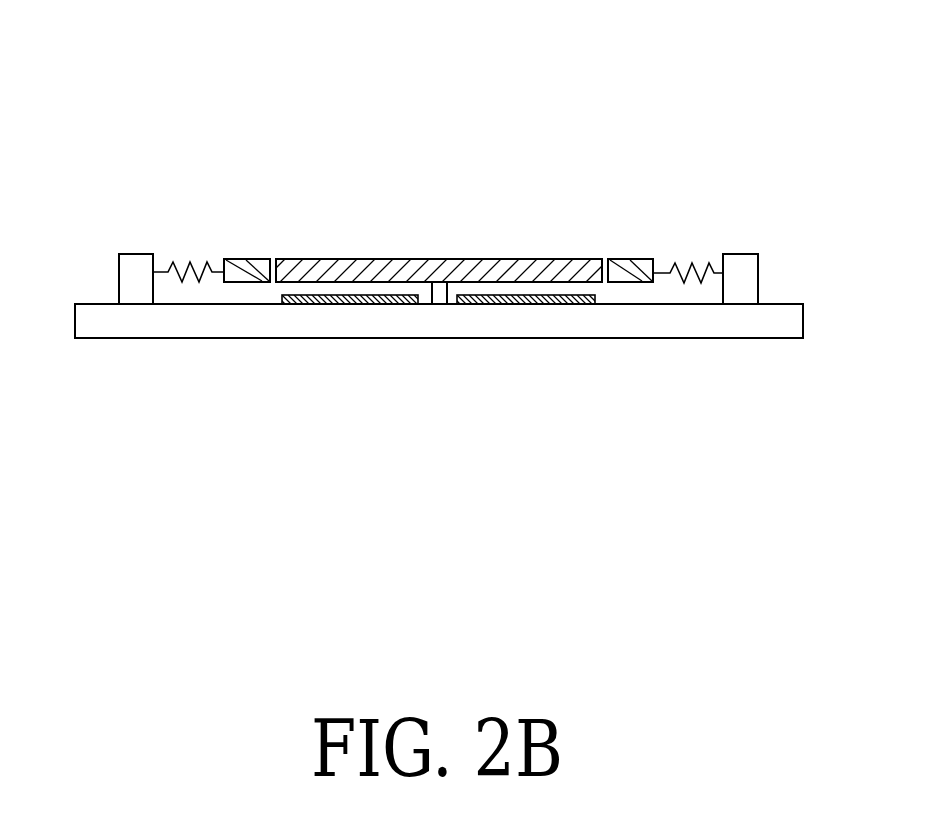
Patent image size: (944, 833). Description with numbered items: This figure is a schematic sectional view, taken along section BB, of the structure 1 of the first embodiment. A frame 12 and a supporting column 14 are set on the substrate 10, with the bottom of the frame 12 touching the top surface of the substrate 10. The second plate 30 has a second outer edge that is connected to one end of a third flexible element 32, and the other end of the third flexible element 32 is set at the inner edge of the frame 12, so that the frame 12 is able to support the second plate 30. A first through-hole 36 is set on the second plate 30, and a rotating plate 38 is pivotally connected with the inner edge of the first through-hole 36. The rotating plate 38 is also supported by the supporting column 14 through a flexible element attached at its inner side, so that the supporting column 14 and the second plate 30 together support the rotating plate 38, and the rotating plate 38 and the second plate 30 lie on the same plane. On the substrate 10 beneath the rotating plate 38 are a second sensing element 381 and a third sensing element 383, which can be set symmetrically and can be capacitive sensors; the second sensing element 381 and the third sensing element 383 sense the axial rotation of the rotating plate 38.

The micro-electro-mechanical device 1 is at (803, 43).
The substrate 10 is at (157, 339).
The frame 12 is at (133, 254).
The supporting column 14 is at (448, 305).
The second plate 30 is at (253, 258).
The third flexible element 32 is at (671, 259).
The first through-hole 36 is at (276, 258).
The rotating plate 38 is at (412, 259).
The second sensing element 381 is at (282, 296).
The third sensing element 383 is at (598, 305).